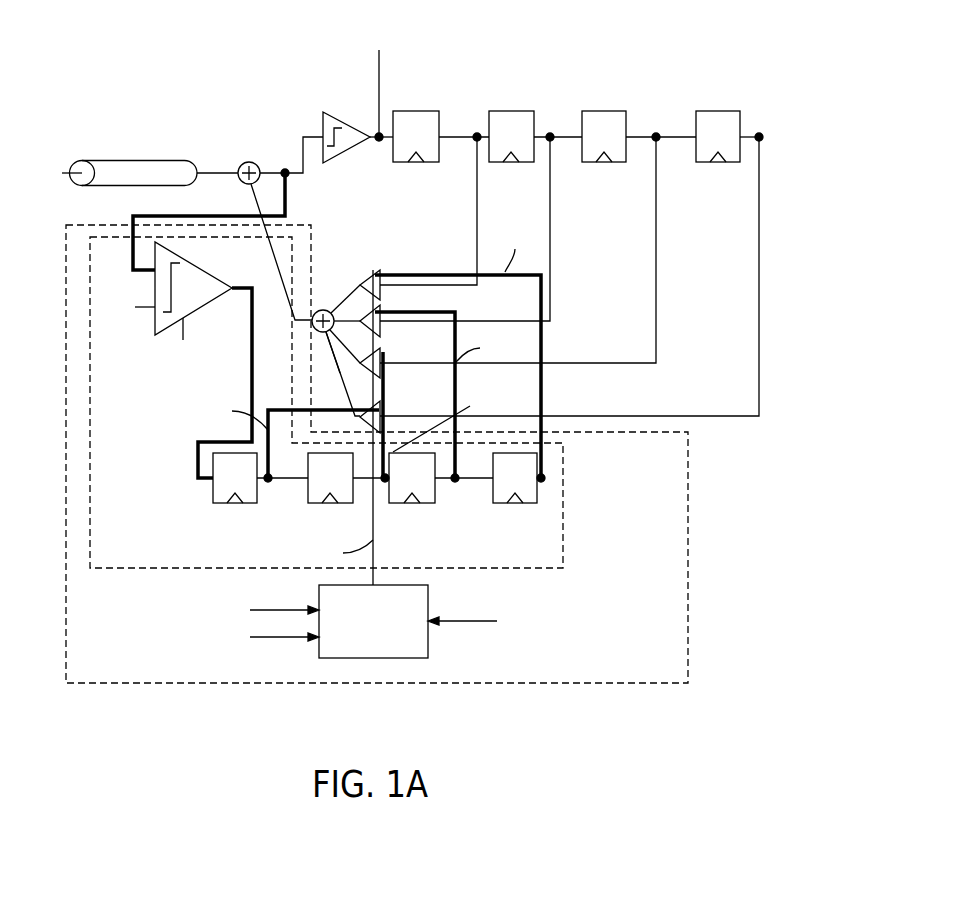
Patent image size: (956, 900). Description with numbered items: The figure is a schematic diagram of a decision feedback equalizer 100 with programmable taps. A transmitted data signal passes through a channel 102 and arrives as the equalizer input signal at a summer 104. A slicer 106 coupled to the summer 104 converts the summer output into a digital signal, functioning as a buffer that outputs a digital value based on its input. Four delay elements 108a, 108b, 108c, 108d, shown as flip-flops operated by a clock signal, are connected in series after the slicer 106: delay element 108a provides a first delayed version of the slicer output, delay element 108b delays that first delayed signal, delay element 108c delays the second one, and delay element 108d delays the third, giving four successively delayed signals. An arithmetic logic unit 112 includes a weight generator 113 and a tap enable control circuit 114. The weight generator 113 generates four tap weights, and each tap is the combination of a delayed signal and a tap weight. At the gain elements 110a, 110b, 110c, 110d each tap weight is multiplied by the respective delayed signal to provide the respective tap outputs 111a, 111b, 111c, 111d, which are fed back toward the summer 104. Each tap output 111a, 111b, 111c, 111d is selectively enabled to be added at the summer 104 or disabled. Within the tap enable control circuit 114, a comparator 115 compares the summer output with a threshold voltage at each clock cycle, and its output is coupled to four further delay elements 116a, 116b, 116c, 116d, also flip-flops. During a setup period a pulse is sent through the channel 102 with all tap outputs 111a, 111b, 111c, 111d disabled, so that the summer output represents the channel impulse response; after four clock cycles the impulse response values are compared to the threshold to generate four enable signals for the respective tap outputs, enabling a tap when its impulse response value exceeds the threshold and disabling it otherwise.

The decision feedback equalizer 100 is at (90, 58).
The channel 102 is at (126, 160).
The summer 104 is at (238, 181).
The slicer 106 is at (336, 111).
The delay element 108a is at (418, 111).
The delay element 108b is at (513, 111).
The delay element 108c is at (606, 111).
The delay element 108d is at (720, 111).
The gain element 110a is at (383, 408).
The gain element 110b is at (383, 369).
The gain element 110c is at (383, 327).
The gain element 110d is at (383, 291).
The tap output 111a is at (352, 288).
The tap output 111b is at (353, 318).
The tap output 111c is at (340, 338).
The tap output 111d is at (340, 373).
The arithmetic logic unit 112 is at (110, 688).
The weight generator 113 is at (385, 632).
The tap enable control circuit 114 is at (136, 570).
The comparator 115 is at (163, 337).
The delay element 116a is at (537, 489).
The delay element 116b is at (435, 489).
The delay element 116c is at (308, 489).
The delay element 116d is at (213, 489).